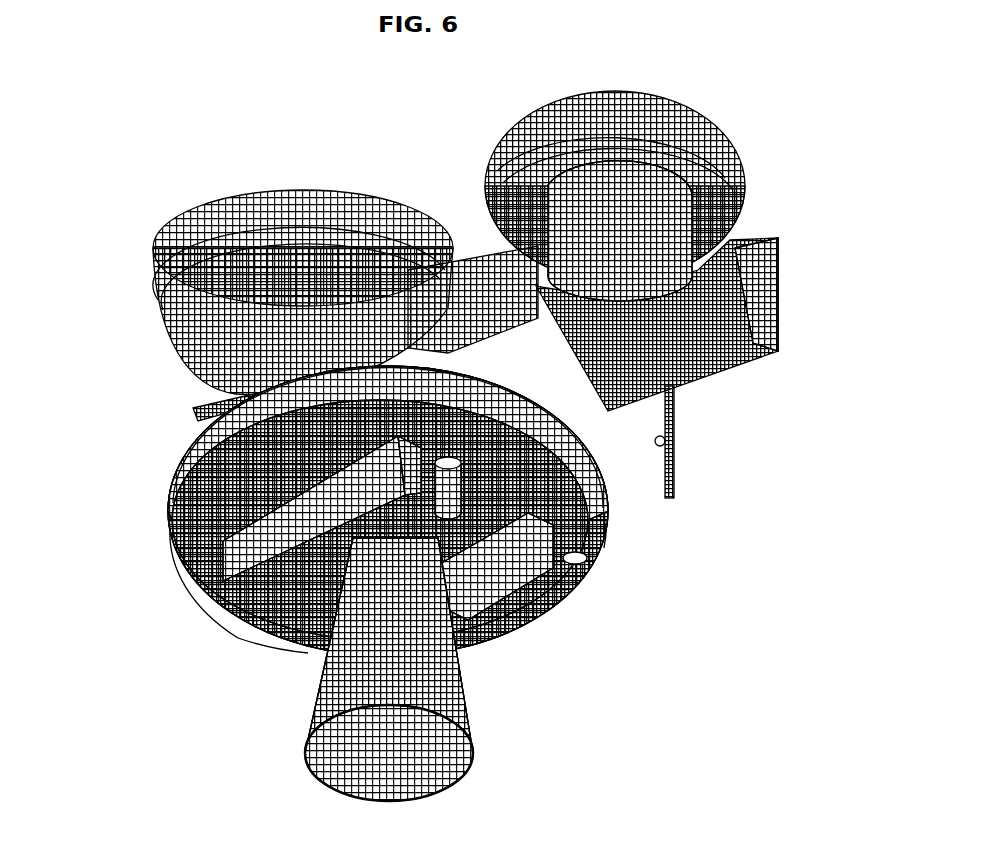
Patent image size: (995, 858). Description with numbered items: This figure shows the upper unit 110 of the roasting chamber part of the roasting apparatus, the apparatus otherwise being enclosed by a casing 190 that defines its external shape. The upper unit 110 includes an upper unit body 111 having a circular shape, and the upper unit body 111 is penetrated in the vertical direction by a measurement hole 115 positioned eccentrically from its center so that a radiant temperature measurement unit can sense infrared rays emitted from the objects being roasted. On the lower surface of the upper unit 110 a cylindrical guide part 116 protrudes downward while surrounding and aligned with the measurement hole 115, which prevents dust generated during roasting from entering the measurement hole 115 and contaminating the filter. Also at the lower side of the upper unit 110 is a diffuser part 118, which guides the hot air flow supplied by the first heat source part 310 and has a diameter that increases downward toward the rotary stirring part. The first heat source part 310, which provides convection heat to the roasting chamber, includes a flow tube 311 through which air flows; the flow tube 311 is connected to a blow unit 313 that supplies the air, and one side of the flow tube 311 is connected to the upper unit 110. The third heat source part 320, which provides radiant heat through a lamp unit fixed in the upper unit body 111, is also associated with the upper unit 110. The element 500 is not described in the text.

The upper unit 110 is at (146, 498).
The upper unit body 111 is at (168, 553).
The measurement hole 115 is at (203, 597).
The guide part 116 is at (598, 527).
The diffuser part 118 is at (476, 711).
The casing 190 is at (334, 166).
The first heat source part 310 is at (468, 200).
The flow tube 311 is at (468, 258).
The blow unit 313 is at (672, 102).
The third heat source part 320 is at (257, 632).
The sealing ring 500 is at (487, 360).